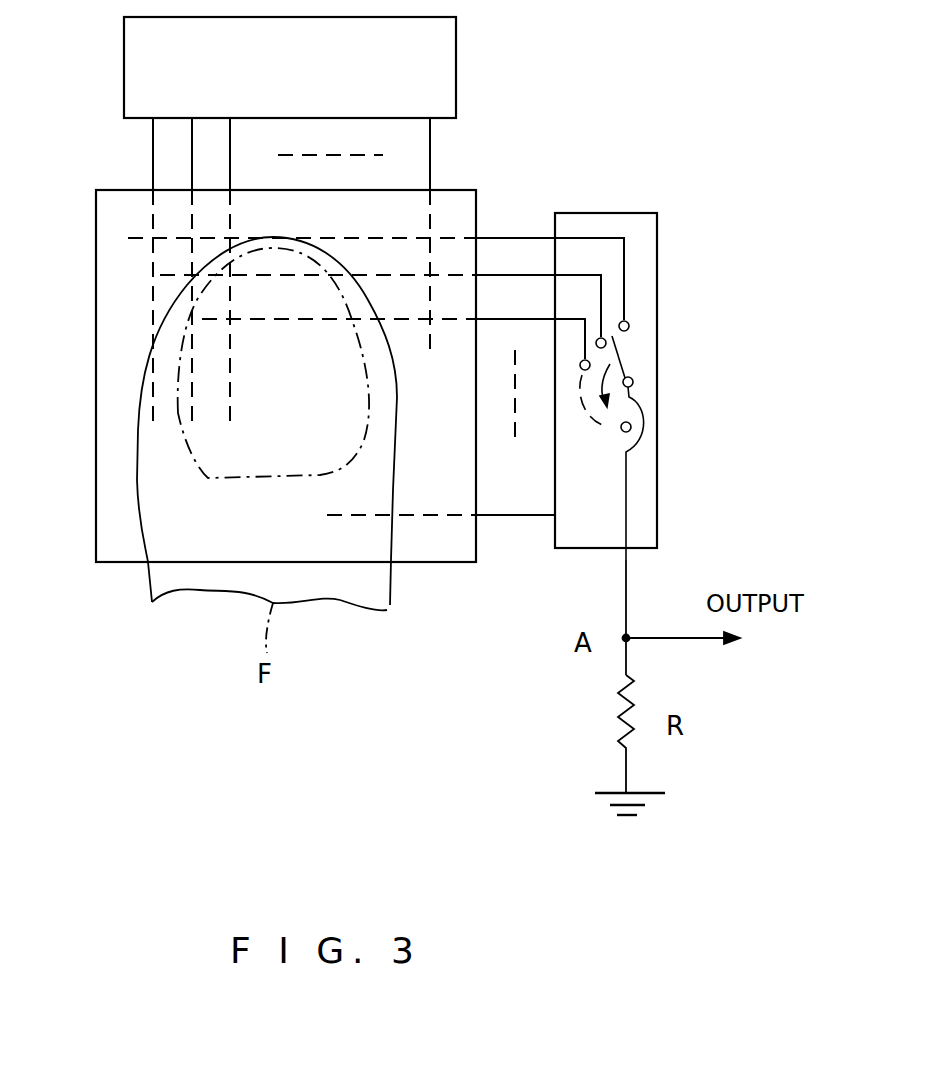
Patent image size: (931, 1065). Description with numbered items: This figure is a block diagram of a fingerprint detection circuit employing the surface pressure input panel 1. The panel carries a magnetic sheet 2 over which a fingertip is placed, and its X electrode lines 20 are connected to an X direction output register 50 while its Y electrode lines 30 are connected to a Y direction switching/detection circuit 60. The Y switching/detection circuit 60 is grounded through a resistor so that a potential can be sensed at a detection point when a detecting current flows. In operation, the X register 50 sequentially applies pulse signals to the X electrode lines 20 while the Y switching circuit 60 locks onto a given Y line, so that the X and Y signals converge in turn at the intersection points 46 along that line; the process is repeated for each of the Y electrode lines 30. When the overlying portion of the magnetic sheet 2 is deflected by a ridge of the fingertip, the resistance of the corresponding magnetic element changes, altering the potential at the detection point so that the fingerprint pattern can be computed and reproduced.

The surface pressure input panel 1 is at (72, 252).
The magnetic sheet 2 is at (96, 334).
The X electrode lines 20 is at (152, 133).
The Y electrode lines 30 is at (533, 241).
The intersection points 46 is at (430, 237).
The X direction output register 50 is at (135, 33).
The Y direction switching/detection circuit 60 is at (643, 267).